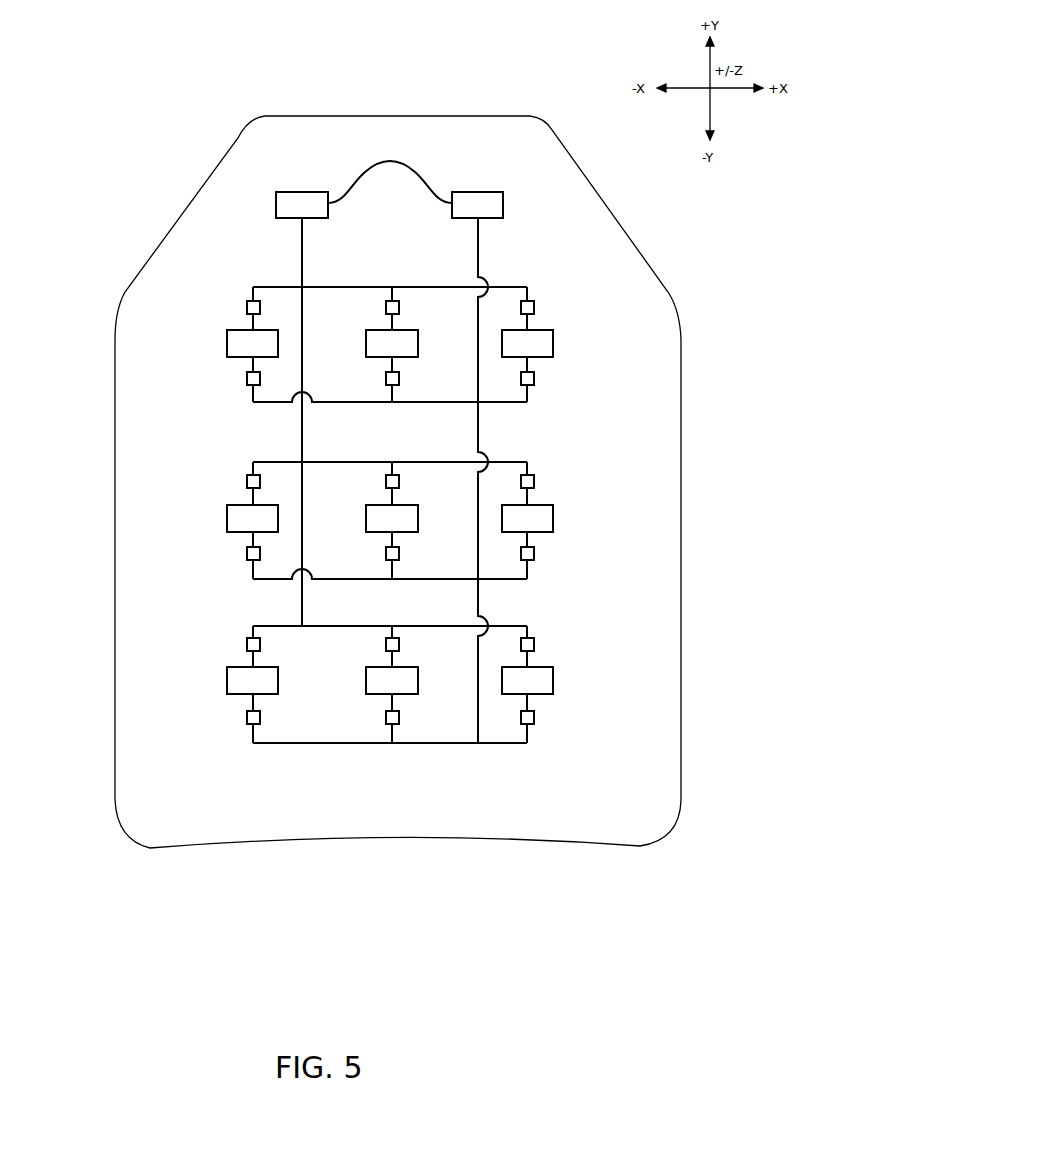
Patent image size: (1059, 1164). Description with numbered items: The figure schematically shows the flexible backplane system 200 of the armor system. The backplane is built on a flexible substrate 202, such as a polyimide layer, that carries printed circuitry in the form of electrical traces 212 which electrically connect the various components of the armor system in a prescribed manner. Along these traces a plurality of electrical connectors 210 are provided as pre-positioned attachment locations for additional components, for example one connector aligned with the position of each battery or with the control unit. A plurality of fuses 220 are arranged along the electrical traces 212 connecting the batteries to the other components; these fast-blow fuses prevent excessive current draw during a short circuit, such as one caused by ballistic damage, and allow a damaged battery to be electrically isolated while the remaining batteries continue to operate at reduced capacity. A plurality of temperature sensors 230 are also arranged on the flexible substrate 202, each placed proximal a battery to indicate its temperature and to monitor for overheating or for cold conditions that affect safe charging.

The flexible backplane system 200 is at (103, 160).
The flexible substrate 202 is at (647, 815).
The electrical connector 210 is at (394, 452).
The electrical traces 212 is at (372, 170).
The fuses 220 is at (387, 474).
The temperature sensors 230 is at (401, 566).